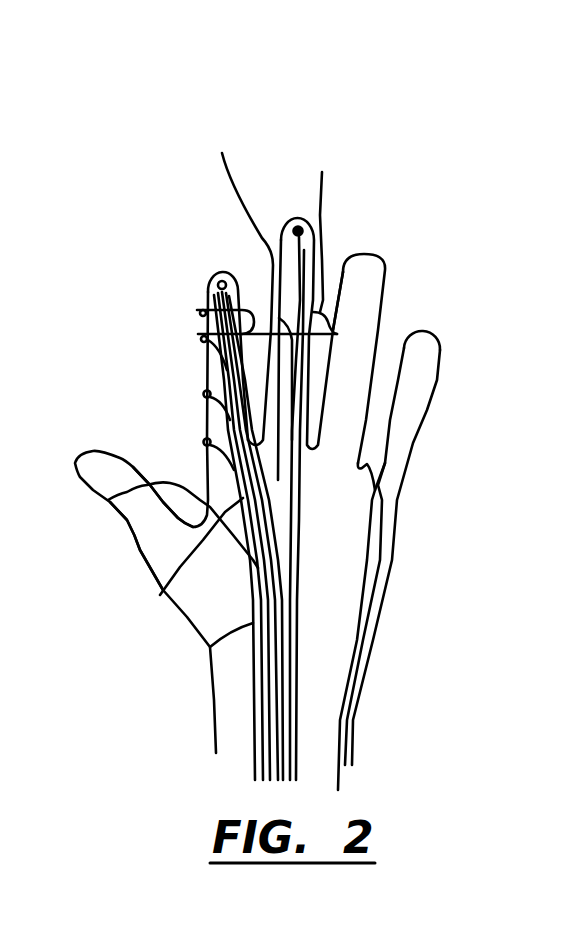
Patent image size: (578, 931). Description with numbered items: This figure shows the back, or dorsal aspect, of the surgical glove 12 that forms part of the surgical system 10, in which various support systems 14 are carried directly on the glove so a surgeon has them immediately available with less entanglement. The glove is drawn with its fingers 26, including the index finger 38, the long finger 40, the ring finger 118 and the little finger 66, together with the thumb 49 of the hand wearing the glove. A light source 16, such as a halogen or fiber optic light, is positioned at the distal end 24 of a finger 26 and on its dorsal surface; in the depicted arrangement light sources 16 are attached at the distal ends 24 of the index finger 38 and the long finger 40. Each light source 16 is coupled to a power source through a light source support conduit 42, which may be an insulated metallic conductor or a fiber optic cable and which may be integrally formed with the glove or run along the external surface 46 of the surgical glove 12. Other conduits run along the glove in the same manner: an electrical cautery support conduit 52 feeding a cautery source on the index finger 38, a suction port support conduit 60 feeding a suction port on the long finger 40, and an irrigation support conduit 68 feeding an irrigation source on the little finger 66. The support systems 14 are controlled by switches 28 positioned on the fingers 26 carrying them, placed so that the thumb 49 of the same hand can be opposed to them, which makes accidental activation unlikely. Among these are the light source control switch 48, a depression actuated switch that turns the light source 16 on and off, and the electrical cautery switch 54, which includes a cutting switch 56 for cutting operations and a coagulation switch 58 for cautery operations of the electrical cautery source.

The surgical system 10 is at (98, 189).
The support systems 14 is at (384, 160).
The light source 16 is at (216, 266).
The light source support conduit 42 is at (88, 265).
The distal end 24 is at (321, 236).
The long finger 40 is at (314, 265).
The finger 26 is at (316, 263).
The surgical glove 12 is at (382, 262).
The ring finger 118 is at (365, 320).
The index finger 38 is at (212, 272).
The light source control switch 48 is at (200, 316).
The cutting switch 56 is at (200, 336).
The switches 28 is at (161, 368).
The electrical cautery switch 54 is at (161, 392).
The coagulation switch 58 is at (203, 398).
The little finger 66 is at (440, 370).
The suction port support conduit 60 is at (110, 502).
The thumb 49 is at (146, 523).
The electrical cautery support conduit 52 is at (157, 597).
The external surface 46 is at (343, 575).
The irrigation support conduit 68 is at (368, 567).